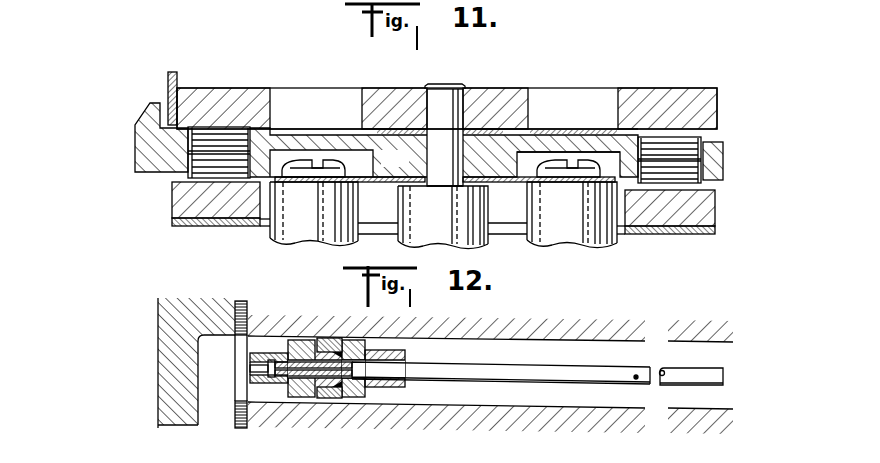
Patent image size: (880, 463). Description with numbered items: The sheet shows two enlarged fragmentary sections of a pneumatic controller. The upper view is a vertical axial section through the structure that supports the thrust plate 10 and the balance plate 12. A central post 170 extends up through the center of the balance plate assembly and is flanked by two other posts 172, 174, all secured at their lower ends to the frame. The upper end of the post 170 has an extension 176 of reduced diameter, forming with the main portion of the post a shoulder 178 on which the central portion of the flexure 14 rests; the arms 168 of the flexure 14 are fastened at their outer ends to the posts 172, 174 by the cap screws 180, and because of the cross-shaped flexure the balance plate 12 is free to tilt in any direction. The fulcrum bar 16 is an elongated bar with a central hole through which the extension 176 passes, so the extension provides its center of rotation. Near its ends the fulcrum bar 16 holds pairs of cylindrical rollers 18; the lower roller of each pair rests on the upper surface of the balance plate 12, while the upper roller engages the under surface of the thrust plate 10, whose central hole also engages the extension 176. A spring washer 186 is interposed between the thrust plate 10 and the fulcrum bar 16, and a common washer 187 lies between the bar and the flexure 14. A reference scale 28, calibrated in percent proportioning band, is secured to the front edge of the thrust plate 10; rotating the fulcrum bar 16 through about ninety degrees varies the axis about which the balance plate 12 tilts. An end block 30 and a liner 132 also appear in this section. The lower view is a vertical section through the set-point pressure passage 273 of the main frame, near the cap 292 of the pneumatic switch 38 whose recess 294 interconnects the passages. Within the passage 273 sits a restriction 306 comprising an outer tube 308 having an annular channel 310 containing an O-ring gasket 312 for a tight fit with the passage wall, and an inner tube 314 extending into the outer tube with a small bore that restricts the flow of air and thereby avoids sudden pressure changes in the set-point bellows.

In FIG. 11, the thrust plate 10 is at (398, 100).
In FIG. 11, the balance plate 12 is at (697, 207).
In FIG. 11, the flexure 14 is at (366, 172).
In FIG. 11, the fulcrum bar 16 is at (135, 175).
In FIG. 11, the cylindrical rollers 18 is at (203, 138).
In FIG. 11, the reference scale 28 is at (170, 77).
In FIG. 11, the end block 30 is at (135, 137).
In FIG. 11, the liner strip 132 is at (693, 236).
In FIG. 11, the arms of the flexure 168 is at (378, 184).
In FIG. 11, the post 170 is at (447, 224).
In FIG. 11, the post 172 is at (293, 220).
In FIG. 11, the post 174 is at (570, 228).
In FIG. 11, the extension 176 is at (448, 100).
In FIG. 11, the shoulder 178 is at (461, 189).
In FIG. 11, the cap screws 180 is at (292, 167).
In FIG. 11, the spring washer 186 is at (532, 136).
In FIG. 11, the common washer 187 is at (410, 157).
In FIG. 12, the pneumatic switch 38 is at (157, 322).
In FIG. 12, the passage 273 is at (522, 406).
In FIG. 12, the cap 292 is at (173, 358).
In FIG. 12, the recess 294 is at (212, 394).
In FIG. 12, the restriction 306 is at (403, 349).
In FIG. 12, the outer tube 308 is at (363, 392).
In FIG. 12, the annular channel 310 is at (297, 399).
In FIG. 12, the O-ring gasket 312 is at (320, 402).
In FIG. 12, the inner tube 314 is at (664, 378).